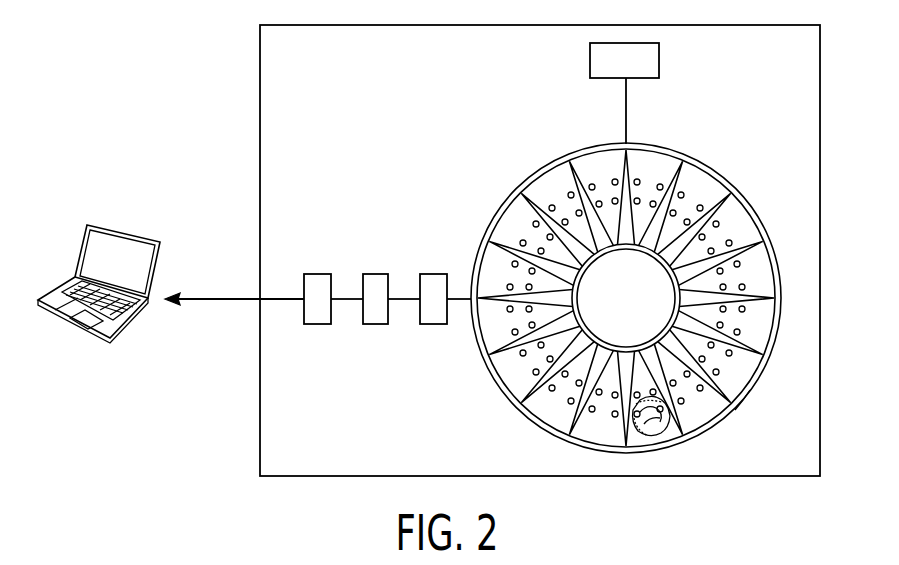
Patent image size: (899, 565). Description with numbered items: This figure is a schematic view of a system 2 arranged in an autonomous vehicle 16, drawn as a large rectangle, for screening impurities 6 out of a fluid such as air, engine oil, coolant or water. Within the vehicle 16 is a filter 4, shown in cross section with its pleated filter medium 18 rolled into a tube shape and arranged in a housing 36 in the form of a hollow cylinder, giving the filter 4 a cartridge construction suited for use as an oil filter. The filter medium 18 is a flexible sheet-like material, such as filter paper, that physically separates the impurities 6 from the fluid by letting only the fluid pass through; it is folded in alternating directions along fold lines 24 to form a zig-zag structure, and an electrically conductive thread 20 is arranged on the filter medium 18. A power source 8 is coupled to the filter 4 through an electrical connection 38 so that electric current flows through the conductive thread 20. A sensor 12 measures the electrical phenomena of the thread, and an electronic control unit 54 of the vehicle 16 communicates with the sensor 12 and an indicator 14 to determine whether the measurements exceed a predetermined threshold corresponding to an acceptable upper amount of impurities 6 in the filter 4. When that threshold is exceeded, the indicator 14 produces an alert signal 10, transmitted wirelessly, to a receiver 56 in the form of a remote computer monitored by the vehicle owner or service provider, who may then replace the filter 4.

The system 2 is at (750, 99).
The filter 4 is at (780, 272).
The impurities 6 is at (660, 432).
The power source 8 is at (659, 62).
The signal 10 is at (240, 300).
The sensor 12 is at (431, 324).
The indicator 14 is at (313, 324).
The autonomous vehicle 16 is at (821, 249).
The filter medium 18 is at (525, 199).
The electrically conductive thread 20 is at (683, 192).
The fold lines 24 is at (741, 405).
The housing 36 is at (777, 340).
The electrical connection 38 is at (626, 108).
The electronic control unit 54 is at (372, 324).
The receiver 56 is at (72, 326).